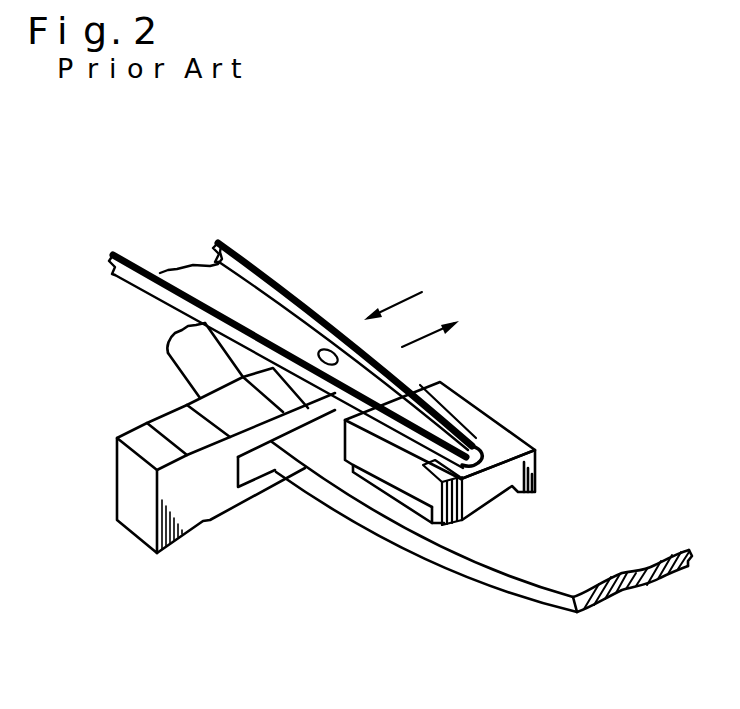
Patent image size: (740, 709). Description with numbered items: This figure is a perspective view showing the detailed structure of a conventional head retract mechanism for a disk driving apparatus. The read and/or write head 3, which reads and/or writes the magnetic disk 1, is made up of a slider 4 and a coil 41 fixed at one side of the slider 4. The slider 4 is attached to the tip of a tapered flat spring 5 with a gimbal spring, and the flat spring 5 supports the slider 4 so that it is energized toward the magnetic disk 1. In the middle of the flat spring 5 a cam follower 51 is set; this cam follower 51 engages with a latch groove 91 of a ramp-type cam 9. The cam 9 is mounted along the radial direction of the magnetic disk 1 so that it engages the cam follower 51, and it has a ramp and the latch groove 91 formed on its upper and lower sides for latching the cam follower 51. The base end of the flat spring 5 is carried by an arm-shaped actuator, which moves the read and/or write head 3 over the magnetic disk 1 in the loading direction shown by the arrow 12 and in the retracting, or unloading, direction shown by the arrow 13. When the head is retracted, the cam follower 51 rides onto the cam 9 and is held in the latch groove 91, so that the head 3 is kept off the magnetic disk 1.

The magnetic disk 1 is at (625, 587).
The read and/or write head 3 is at (492, 408).
The slider 4 is at (530, 434).
The coil 41 is at (460, 502).
The tapered flat spring 5 is at (408, 377).
The cam follower 51 is at (332, 349).
The ramp-type cam 9 is at (133, 500).
The latch groove 91 is at (172, 422).
The arrow indicating loading direction 12 is at (436, 330).
The arrow indicating retracting direction 13 is at (405, 299).